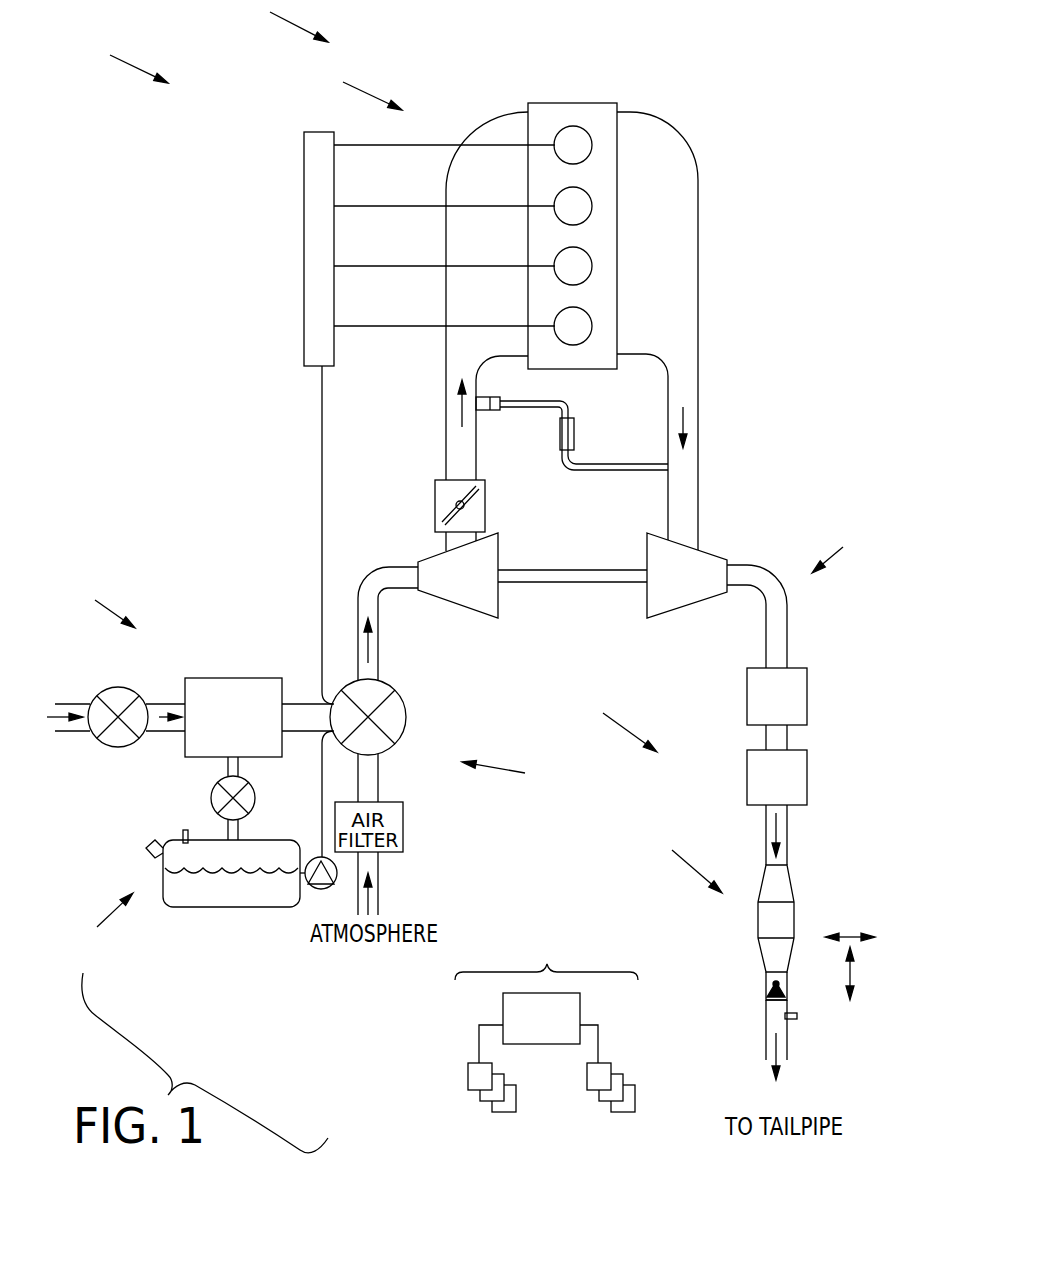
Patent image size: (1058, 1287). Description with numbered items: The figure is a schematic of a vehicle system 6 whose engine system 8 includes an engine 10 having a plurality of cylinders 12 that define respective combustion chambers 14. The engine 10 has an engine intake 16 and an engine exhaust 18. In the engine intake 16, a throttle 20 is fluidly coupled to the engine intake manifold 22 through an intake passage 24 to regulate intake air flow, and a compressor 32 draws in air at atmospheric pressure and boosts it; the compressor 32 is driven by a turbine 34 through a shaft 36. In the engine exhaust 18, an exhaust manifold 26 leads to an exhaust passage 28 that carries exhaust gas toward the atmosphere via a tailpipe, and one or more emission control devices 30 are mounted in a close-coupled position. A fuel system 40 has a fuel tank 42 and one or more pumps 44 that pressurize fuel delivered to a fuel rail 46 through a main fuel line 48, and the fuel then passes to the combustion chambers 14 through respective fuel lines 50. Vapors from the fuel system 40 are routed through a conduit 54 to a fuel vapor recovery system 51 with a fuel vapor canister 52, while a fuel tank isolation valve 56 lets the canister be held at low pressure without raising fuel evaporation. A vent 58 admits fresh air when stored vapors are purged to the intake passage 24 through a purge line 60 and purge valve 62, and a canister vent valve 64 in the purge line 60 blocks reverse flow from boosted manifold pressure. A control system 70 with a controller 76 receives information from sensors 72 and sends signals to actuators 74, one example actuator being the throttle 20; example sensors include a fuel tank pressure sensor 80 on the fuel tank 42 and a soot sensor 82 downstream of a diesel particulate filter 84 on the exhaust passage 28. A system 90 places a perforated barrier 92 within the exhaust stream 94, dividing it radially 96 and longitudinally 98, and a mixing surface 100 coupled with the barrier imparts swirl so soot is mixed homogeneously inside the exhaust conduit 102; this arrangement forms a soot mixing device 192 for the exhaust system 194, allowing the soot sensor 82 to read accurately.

The vehicle system 6 is at (130, 60).
The engine system 8 is at (289, 21).
The engine 10 is at (355, 85).
The cylinders 12 is at (560, 140).
The combustion chambers 14 is at (588, 132).
The engine intake 16 is at (513, 779).
The engine exhaust 18 is at (845, 550).
The throttle 20 is at (470, 501).
The engine intake manifold 22 is at (502, 259).
The intake passage 24 is at (447, 457).
The exhaust manifold 26 is at (665, 259).
The exhaust passage 28 is at (767, 618).
The emission control devices 30 is at (791, 712).
The compressor 32 is at (477, 585).
The turbine 34 is at (692, 585).
The shaft 36 is at (555, 583).
The fuel system 40 is at (100, 923).
The fuel tank 42 is at (238, 908).
The pumps 44 is at (318, 857).
The fuel rail 46 is at (310, 278).
The main fuel line 48 is at (322, 477).
The fuel lines 50 is at (420, 327).
The fuel vapor recovery system 51 is at (105, 604).
The fuel vapor canister 52 is at (245, 677).
The conduit 54 is at (228, 833).
The fuel tank isolation valve 56 is at (223, 777).
The vent 58 is at (57, 723).
The purge line 60 is at (307, 698).
The purge valve 62 is at (118, 687).
The canister vent valve 64 is at (407, 697).
The control system 70 is at (547, 964).
The sensors 72 is at (490, 1108).
The actuators 74 is at (612, 1108).
The controller 76 is at (556, 1033).
The fuel tank pressure sensor 80 is at (184, 833).
The soot sensor 82 is at (797, 1015).
The diesel particulate filter 84 is at (794, 902).
The system 90 is at (683, 864).
The perforated barrier 92 is at (767, 982).
The exhaust stream 94 is at (779, 823).
The radial direction 96 is at (855, 936).
The longitudinal direction 98 is at (853, 968).
The mixing surface 100 is at (777, 1000).
The exhaust conduit 102 is at (788, 1050).
The soot mixing device 192 is at (777, 965).
The exhaust system 194 is at (618, 721).